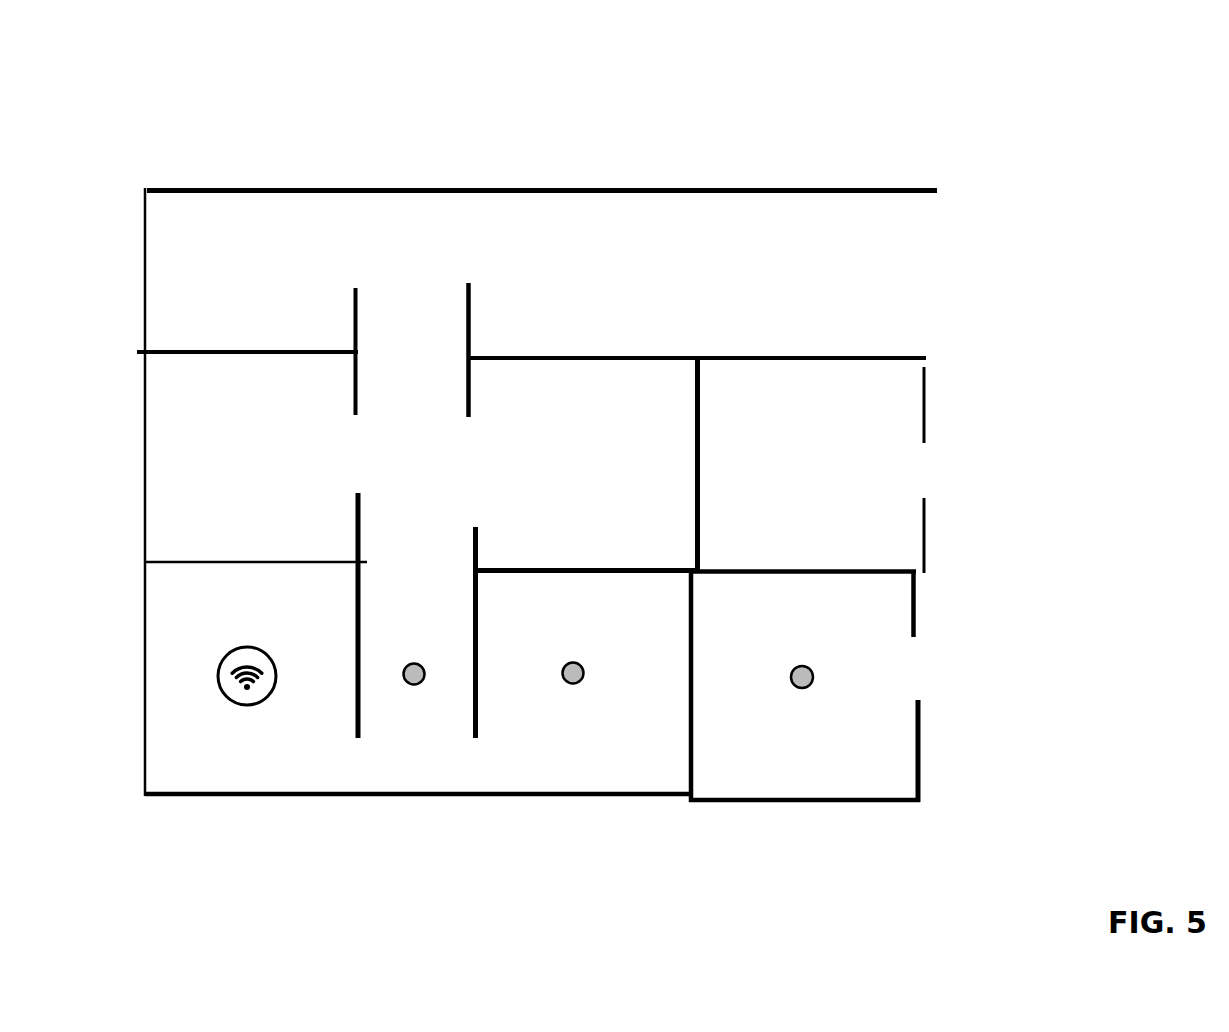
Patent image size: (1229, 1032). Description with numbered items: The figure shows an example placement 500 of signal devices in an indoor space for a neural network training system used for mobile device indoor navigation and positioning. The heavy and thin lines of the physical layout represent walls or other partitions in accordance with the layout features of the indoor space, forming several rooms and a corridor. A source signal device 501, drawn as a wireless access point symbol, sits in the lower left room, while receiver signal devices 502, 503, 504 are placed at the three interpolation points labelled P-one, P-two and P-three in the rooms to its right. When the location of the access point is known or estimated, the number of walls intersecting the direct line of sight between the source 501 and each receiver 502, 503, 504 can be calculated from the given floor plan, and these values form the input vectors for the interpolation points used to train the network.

The placement 500 is at (1128, 42).
The source signal device 501 is at (249, 690).
The receiver signal device 502 is at (417, 685).
The receiver signal device 503 is at (575, 684).
The receiver signal device 504 is at (802, 689).